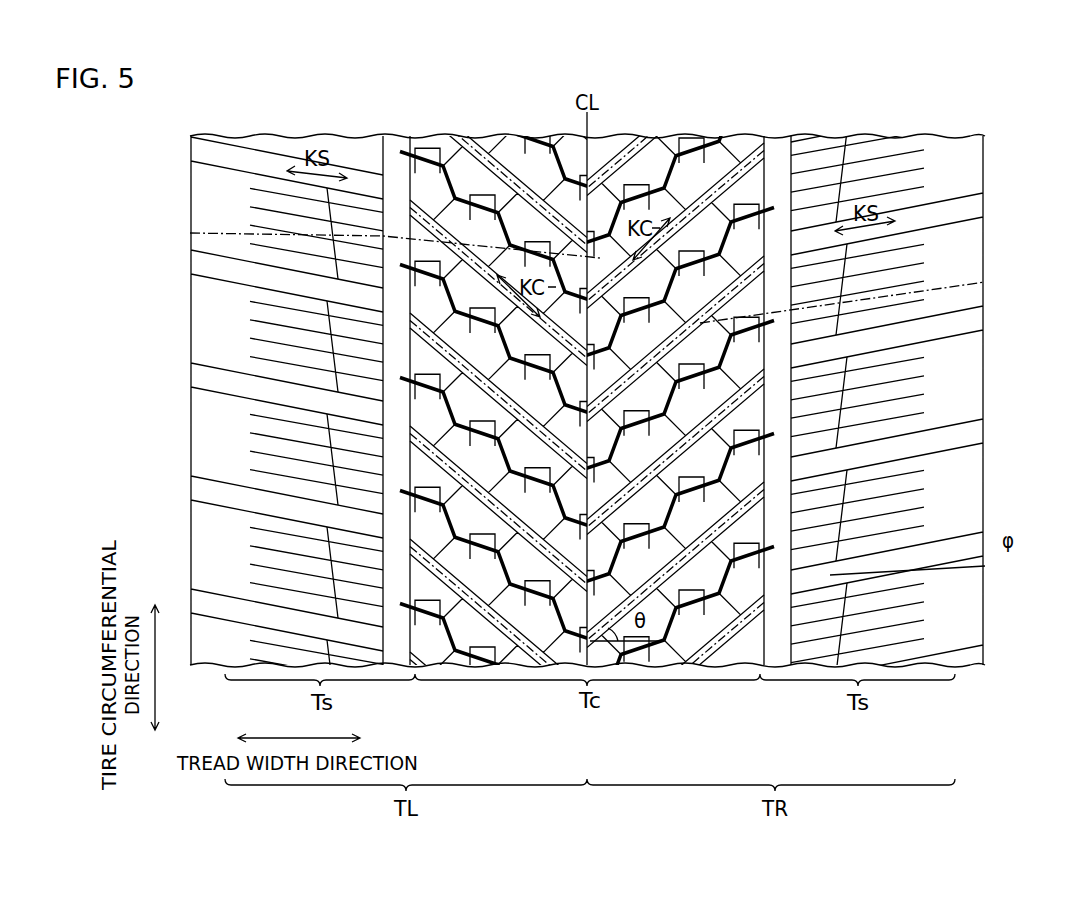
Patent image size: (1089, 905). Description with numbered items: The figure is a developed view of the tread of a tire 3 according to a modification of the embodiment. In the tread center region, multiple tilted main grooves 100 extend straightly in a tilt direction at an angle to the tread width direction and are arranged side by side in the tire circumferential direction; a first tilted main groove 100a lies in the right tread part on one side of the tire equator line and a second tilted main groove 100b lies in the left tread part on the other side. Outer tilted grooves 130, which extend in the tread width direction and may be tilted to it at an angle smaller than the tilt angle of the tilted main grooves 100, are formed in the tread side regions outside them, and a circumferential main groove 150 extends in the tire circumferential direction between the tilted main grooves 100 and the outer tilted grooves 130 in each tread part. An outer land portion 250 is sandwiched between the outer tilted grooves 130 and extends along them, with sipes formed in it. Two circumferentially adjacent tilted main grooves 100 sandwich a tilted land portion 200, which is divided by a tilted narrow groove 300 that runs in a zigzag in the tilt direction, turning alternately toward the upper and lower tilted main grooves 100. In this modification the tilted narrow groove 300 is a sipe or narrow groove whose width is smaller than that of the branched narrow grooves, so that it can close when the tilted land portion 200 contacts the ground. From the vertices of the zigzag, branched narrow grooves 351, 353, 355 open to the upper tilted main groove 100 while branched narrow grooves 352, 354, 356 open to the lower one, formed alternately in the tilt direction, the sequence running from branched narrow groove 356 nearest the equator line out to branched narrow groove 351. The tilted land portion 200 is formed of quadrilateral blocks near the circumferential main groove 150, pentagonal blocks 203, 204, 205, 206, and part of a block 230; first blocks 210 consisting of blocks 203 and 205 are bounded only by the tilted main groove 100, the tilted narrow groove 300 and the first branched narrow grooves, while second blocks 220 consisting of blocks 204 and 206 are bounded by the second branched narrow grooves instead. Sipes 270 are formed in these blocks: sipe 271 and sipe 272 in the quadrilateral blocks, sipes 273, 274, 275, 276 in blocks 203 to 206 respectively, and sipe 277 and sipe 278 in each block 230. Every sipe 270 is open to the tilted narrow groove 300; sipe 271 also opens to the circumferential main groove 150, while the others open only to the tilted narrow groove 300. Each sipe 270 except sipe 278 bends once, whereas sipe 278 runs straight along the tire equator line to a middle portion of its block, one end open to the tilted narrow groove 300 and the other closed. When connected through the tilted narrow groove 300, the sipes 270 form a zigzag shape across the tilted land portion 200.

The tire 3 is at (887, 75).
The tilted main groove 100 is at (588, 409).
The first tilted main groove 100a is at (778, 125).
The second tilted main groove 100b is at (400, 135).
The outer tilted groove 130 is at (991, 326).
The circumferential main groove 150 is at (783, 123).
The tilted land portion 200 is at (811, 128).
The block 230 is at (550, 590).
The outer land portion 250 is at (975, 250).
The tilted narrow groove 300 is at (985, 283).
The sipe 270 is at (106, 320).
The sipe 271 is at (437, 343).
The sipe 272 is at (480, 388).
The sipe 273 is at (437, 400).
The sipe 274 is at (492, 452).
The sipe 275 is at (450, 462).
The sipe 276 is at (525, 500).
The sipe 277 is at (500, 525).
The sipe 278 is at (585, 540).
The branched narrow groove 351 is at (690, 178).
The branched narrow groove 352 is at (690, 330).
The branched narrow groove 353 is at (665, 200).
The branched narrow groove 354 is at (630, 385).
The branched narrow groove 355 is at (596, 290).
The branched narrow groove 356 is at (594, 400).
The block 203 is at (788, 455).
The block 204 is at (730, 520).
The block 205 is at (763, 490).
The block 206 is at (705, 555).
The first blocks 210 is at (752, 742).
The second blocks 220 is at (637, 742).